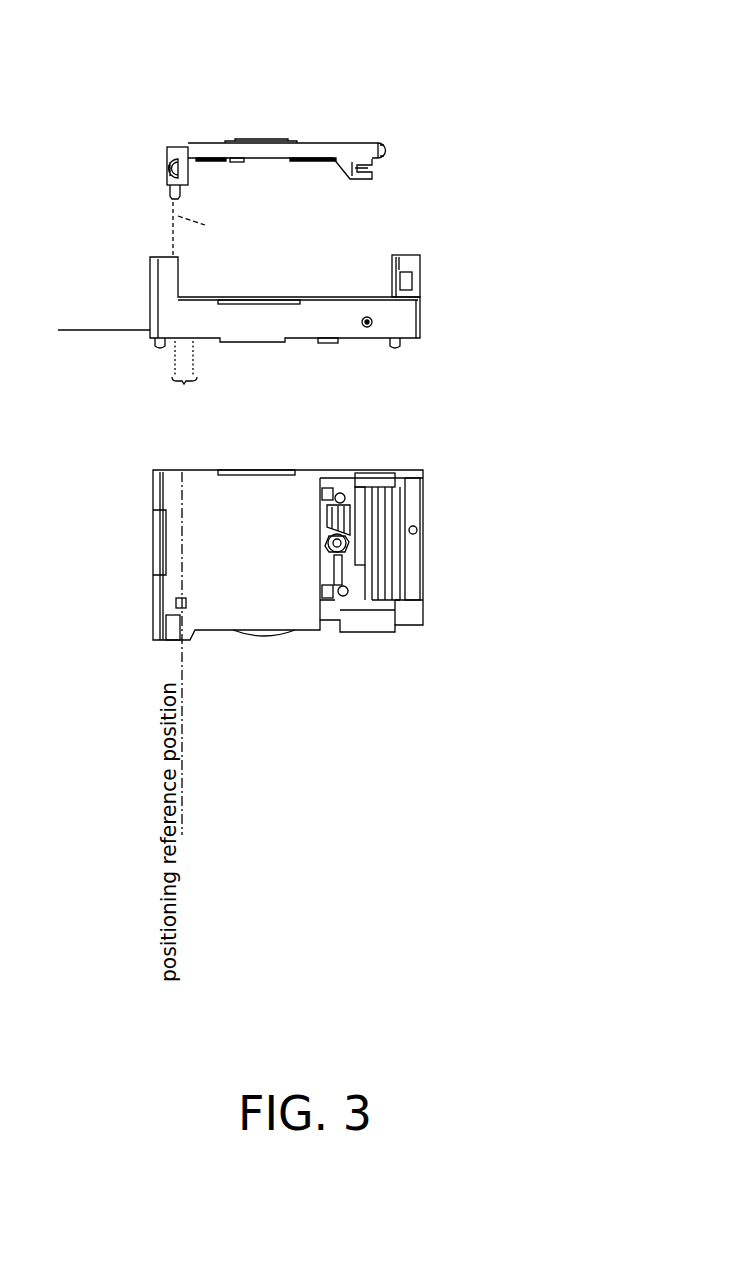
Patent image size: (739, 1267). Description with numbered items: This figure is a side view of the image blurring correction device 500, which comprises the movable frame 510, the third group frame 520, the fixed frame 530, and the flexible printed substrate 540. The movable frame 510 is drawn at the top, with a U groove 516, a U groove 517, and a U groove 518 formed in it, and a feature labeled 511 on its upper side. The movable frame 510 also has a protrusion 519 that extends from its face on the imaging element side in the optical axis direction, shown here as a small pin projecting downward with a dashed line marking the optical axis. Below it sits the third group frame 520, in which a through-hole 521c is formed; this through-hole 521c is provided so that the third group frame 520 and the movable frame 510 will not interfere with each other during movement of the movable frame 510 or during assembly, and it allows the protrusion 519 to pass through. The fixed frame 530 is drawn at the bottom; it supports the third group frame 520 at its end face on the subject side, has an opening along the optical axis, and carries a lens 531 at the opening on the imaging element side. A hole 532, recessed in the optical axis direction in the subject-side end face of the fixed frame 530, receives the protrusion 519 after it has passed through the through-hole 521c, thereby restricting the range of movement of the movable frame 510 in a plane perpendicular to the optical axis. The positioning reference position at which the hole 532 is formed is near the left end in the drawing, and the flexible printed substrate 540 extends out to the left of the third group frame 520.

The image blurring correction device 500 is at (134, 61).
The movable frame 510 is at (321, 147).
The top rib 511 is at (258, 140).
The U groove 516 is at (386, 149).
The U groove 517 is at (166, 167).
The U groove 518 is at (369, 170).
The protrusion 519 is at (168, 192).
The third group frame 520 is at (420, 312).
The through-hole 521c is at (196, 376).
The fixed frame 530 is at (425, 478).
The lens 531 is at (262, 633).
The hole 532 is at (173, 458).
The flexible printed substrate 540 is at (96, 330).